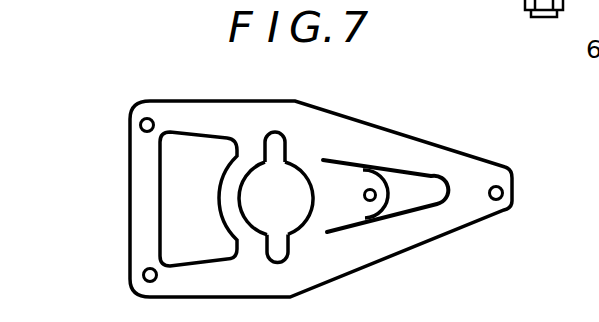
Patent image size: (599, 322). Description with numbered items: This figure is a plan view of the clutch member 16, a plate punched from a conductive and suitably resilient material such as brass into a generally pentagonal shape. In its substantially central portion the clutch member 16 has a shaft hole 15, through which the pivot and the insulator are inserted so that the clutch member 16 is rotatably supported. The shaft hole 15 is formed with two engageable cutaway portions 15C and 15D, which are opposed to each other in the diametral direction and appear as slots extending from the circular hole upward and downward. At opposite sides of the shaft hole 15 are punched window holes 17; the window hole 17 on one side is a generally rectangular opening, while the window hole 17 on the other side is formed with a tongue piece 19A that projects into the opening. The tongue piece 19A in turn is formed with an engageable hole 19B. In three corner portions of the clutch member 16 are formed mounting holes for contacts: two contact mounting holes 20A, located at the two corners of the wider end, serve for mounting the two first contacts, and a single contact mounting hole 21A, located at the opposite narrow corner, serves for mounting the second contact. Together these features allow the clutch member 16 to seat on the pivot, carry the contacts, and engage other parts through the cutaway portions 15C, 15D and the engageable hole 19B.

The shaft hole 15 is at (287, 197).
The engageable cutaway portion 15C is at (277, 135).
The engageable cutaway portion 15D is at (292, 254).
The clutch member 16 is at (367, 123).
The window hole 17 is at (185, 196).
The tongue piece 19A is at (358, 180).
The engageable hole 19B is at (374, 200).
The contact mounting hole 20A is at (137, 125).
The contact mounting hole 21A is at (503, 191).